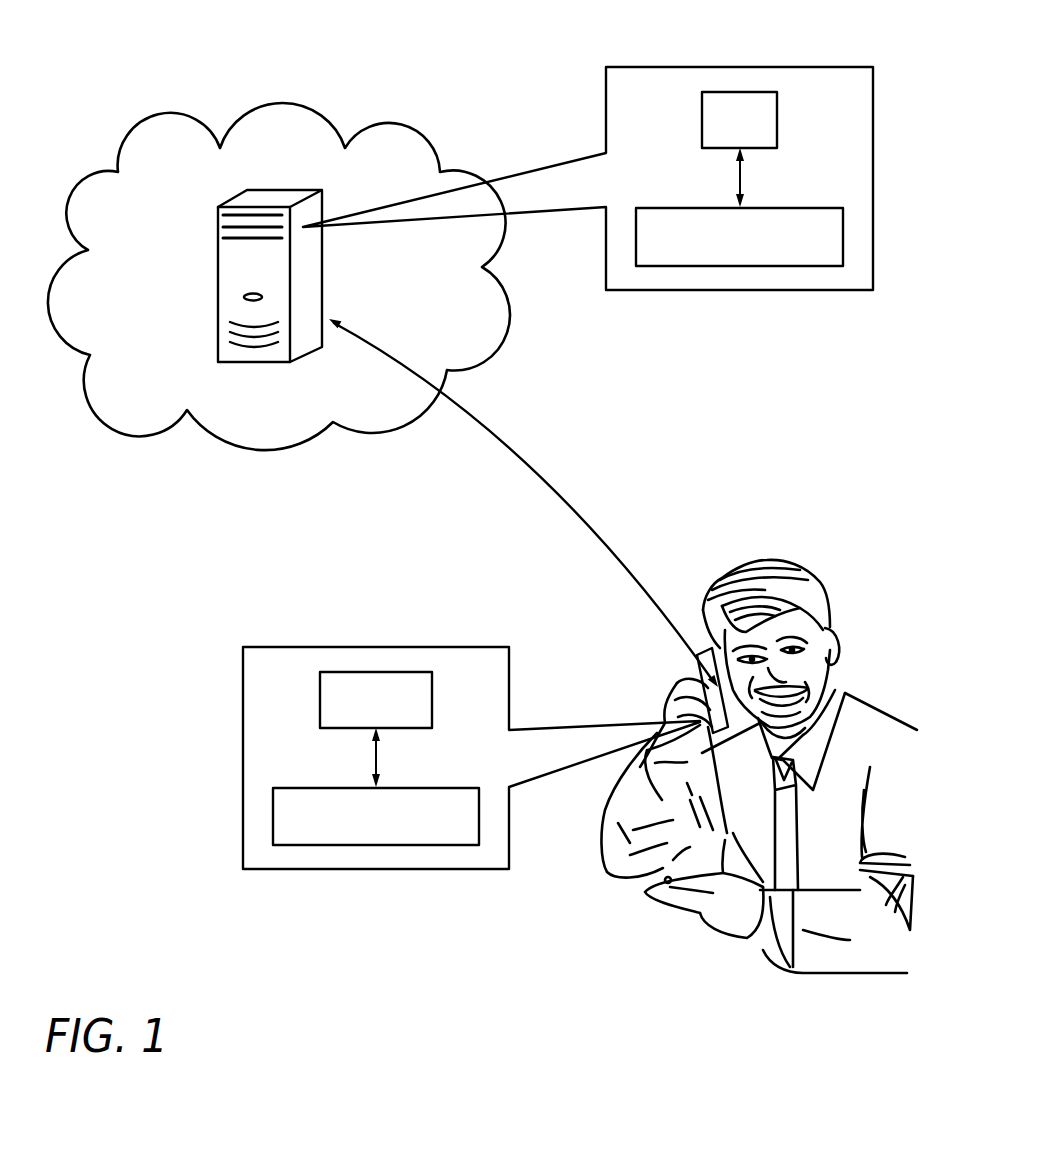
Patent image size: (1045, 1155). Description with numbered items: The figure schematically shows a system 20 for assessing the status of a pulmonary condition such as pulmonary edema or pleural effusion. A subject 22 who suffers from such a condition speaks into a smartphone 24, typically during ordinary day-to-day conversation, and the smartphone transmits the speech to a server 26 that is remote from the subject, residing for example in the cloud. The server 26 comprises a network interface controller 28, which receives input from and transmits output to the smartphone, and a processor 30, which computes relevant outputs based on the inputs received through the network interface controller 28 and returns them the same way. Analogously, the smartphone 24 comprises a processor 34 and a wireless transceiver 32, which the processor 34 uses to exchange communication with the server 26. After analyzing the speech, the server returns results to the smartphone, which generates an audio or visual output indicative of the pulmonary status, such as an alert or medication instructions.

The system 20 is at (100, 112).
The subject 22 is at (770, 562).
The smartphone 24 is at (697, 668).
The server 26 is at (218, 297).
The network interface controller (NIC) 28 is at (740, 92).
The processor 30 is at (740, 266).
The wireless transceiver (TCVR) 32 is at (376, 672).
The processor 34 is at (376, 845).